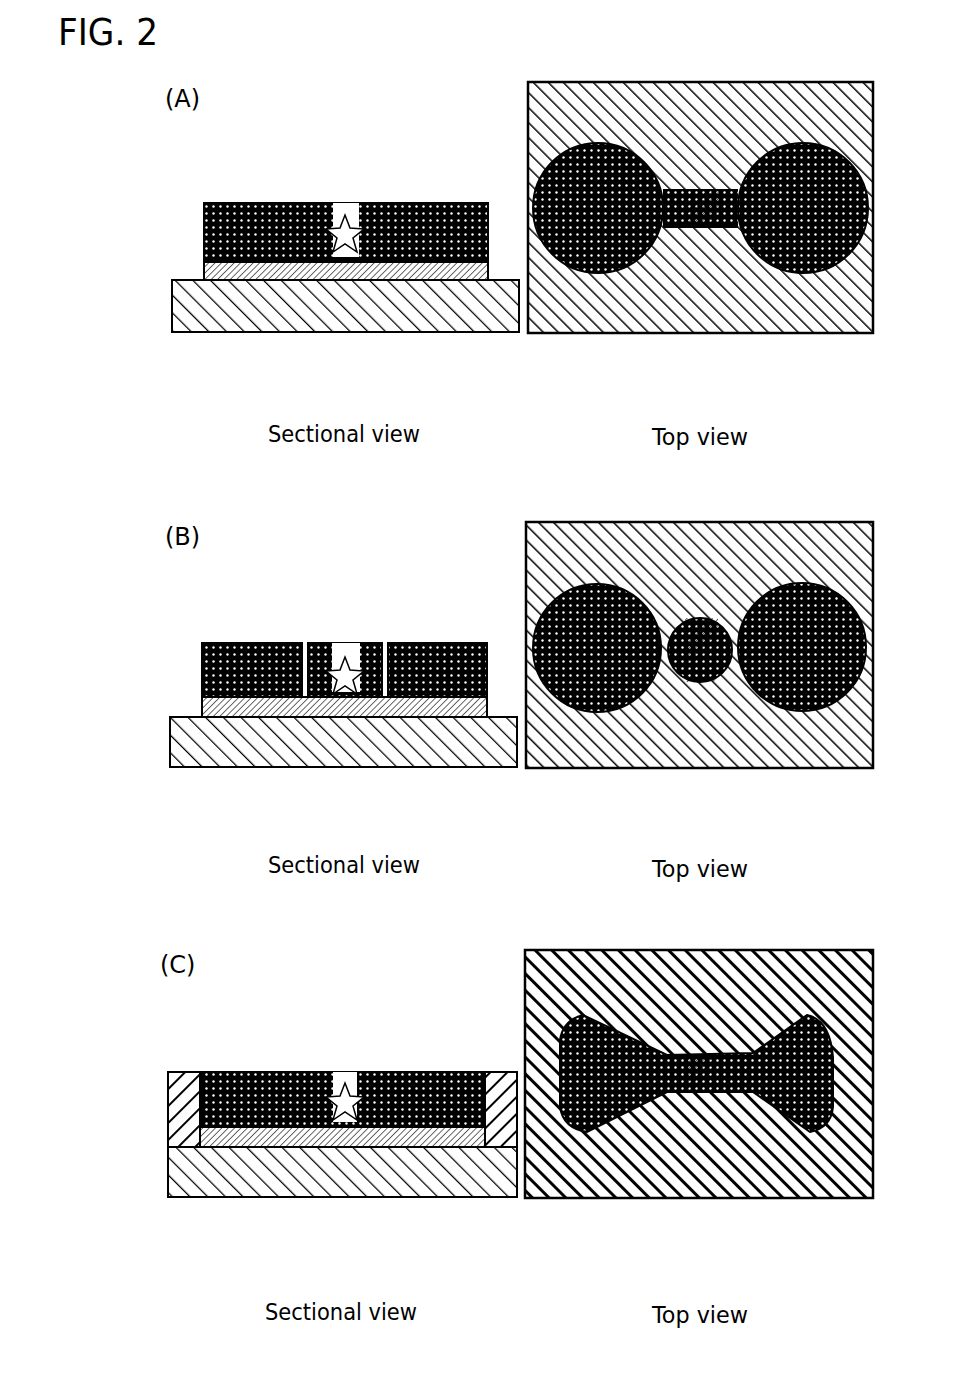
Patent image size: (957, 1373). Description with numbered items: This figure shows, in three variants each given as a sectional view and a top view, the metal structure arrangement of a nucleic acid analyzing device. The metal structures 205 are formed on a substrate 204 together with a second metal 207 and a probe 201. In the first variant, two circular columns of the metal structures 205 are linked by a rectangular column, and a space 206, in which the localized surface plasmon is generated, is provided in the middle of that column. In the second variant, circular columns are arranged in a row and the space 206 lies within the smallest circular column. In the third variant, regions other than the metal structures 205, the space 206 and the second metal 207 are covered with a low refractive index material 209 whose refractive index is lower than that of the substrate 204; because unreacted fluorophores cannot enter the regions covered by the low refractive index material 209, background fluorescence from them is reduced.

The probe 201 is at (390, 280).
The substrate 204 is at (787, 313).
The metal structures 205 is at (600, 273).
The space in which localized surface plasmon is generated 206 is at (342, 214).
The second metal 207 is at (314, 280).
The low refractive index material 209 is at (183, 1076).